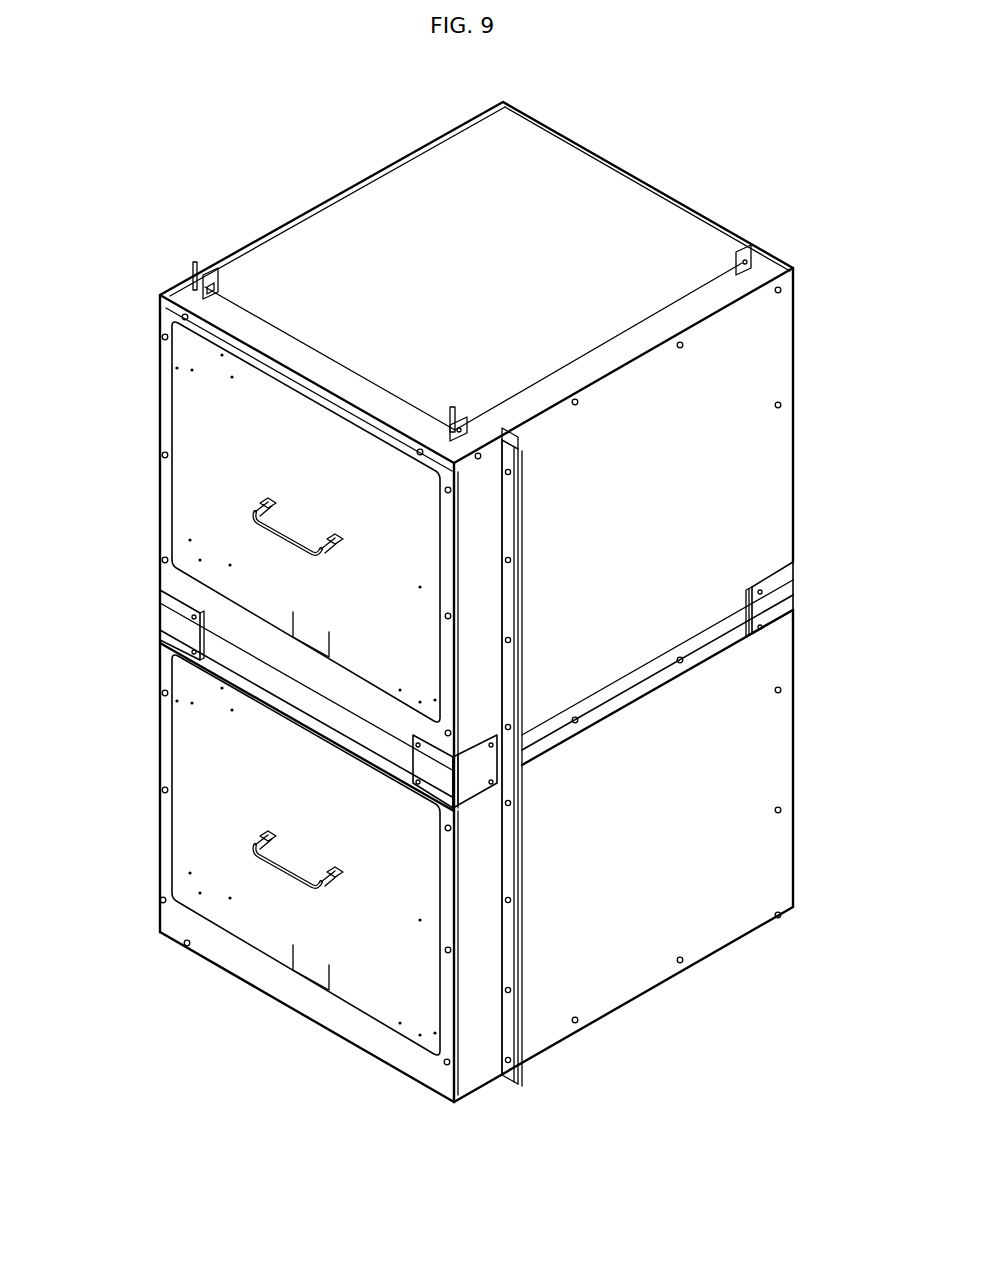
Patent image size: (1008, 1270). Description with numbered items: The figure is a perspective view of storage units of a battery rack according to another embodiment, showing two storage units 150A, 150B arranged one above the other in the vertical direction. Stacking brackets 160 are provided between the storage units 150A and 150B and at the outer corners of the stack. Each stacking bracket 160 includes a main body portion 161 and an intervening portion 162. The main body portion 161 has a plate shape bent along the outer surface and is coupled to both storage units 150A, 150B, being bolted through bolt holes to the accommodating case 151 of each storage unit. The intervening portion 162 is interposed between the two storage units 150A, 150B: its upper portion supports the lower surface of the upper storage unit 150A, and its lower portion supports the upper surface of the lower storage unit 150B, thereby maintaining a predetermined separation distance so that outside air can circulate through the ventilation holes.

The storage unit 150A is at (140, 400).
The storage unit 150B is at (142, 752).
The accommodating case 151 is at (796, 410).
The stacking bracket 160 is at (518, 804).
The main body portion 161 is at (786, 598).
The intervening portion 162 is at (747, 615).